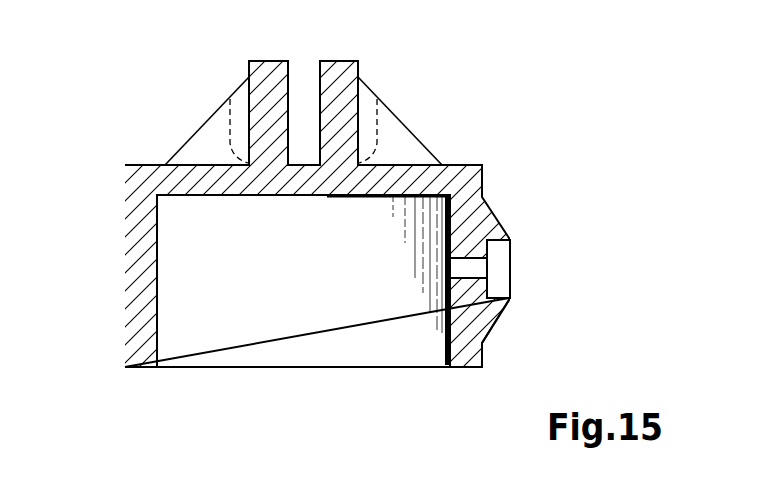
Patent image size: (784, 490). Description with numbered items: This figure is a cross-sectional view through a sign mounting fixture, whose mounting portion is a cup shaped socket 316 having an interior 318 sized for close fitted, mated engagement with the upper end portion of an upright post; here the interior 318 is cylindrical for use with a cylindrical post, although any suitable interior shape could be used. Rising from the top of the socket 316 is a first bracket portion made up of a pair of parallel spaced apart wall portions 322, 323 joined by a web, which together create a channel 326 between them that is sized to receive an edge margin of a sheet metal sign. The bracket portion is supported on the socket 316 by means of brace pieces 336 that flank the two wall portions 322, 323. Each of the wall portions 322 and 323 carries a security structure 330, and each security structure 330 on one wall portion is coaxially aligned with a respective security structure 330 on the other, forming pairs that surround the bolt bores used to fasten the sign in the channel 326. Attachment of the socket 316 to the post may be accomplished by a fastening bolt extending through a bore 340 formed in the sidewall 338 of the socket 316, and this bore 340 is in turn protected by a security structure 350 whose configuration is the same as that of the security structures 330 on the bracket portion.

The cup shaped socket 316 is at (137, 298).
The interior 318 is at (305, 288).
The wall portion 322 is at (355, 62).
The wall portion 323 is at (276, 68).
The channel 326 is at (304, 76).
The security structure 330 is at (248, 78).
The brace piece 336 is at (205, 147).
The sidewall 338 is at (148, 328).
The bore 340 is at (472, 267).
The security structure 350 is at (482, 312).